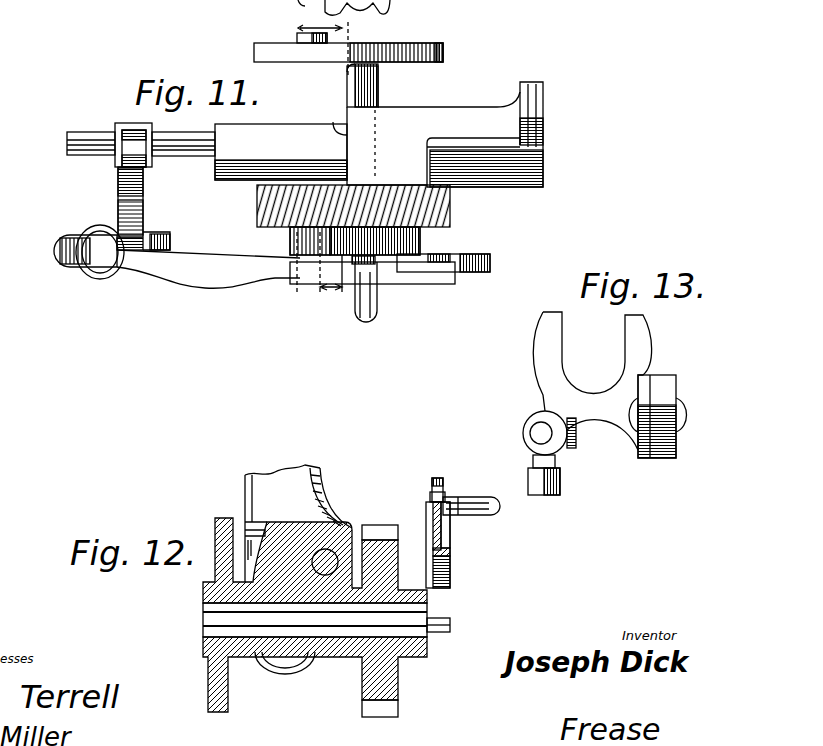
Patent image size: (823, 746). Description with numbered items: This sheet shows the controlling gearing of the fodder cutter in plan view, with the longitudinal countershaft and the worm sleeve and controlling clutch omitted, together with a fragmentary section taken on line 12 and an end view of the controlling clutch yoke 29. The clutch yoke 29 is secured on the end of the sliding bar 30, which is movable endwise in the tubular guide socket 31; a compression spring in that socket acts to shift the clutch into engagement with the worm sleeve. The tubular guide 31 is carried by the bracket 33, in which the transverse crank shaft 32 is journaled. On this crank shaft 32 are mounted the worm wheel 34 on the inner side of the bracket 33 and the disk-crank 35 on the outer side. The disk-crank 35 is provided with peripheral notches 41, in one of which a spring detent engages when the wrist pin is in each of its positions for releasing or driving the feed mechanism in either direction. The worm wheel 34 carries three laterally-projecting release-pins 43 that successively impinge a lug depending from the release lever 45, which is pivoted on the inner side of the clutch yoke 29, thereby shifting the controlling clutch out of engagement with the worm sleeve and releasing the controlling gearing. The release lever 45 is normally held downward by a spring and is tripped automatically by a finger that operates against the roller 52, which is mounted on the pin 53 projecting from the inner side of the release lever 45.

In FIG. 11, the section line 12— 12 is at (334, 167).
In FIG. 11, the clutch yoke 29 is at (128, 190).
In FIG. 13, the clutch yoke 29 is at (643, 335).
In FIG. 11, the sliding bar 30 is at (185, 152).
In FIG. 12, the sliding bar 30 is at (340, 530).
In FIG. 13, the sliding bar 30 is at (541, 433).
In FIG. 11, the tubular guide socket 31 is at (260, 130).
In FIG. 11, the transverse crank shaft 32 is at (425, 0).
In FIG. 12, the transverse crank shaft 32 is at (218, 608).
In FIG. 11, the bracket 33 is at (438, 125).
In FIG. 12, the bracket 33 is at (335, 695).
In FIG. 11, the worm wheel 34 is at (450, 212).
In FIG. 12, the worm wheel 34 is at (385, 678).
In FIG. 11, the disk-crank 35 is at (443, 54).
In FIG. 12, the disk-crank 35 is at (215, 545).
In FIG. 11, the peripheral notches 41 is at (413, 55).
In FIG. 11, the release-pins 43 is at (297, 262).
In FIG. 12, the release-pins 43 is at (440, 622).
In FIG. 11, the release lever 45 is at (205, 268).
In FIG. 12, the release lever 45 is at (441, 545).
In FIG. 13, the release lever 45 is at (663, 387).
In FIG. 11, the roller 52 is at (378, 307).
In FIG. 12, the roller 52 is at (472, 507).
In FIG. 11, the pin 53 is at (455, 285).
In FIG. 12, the pin 53 is at (450, 528).